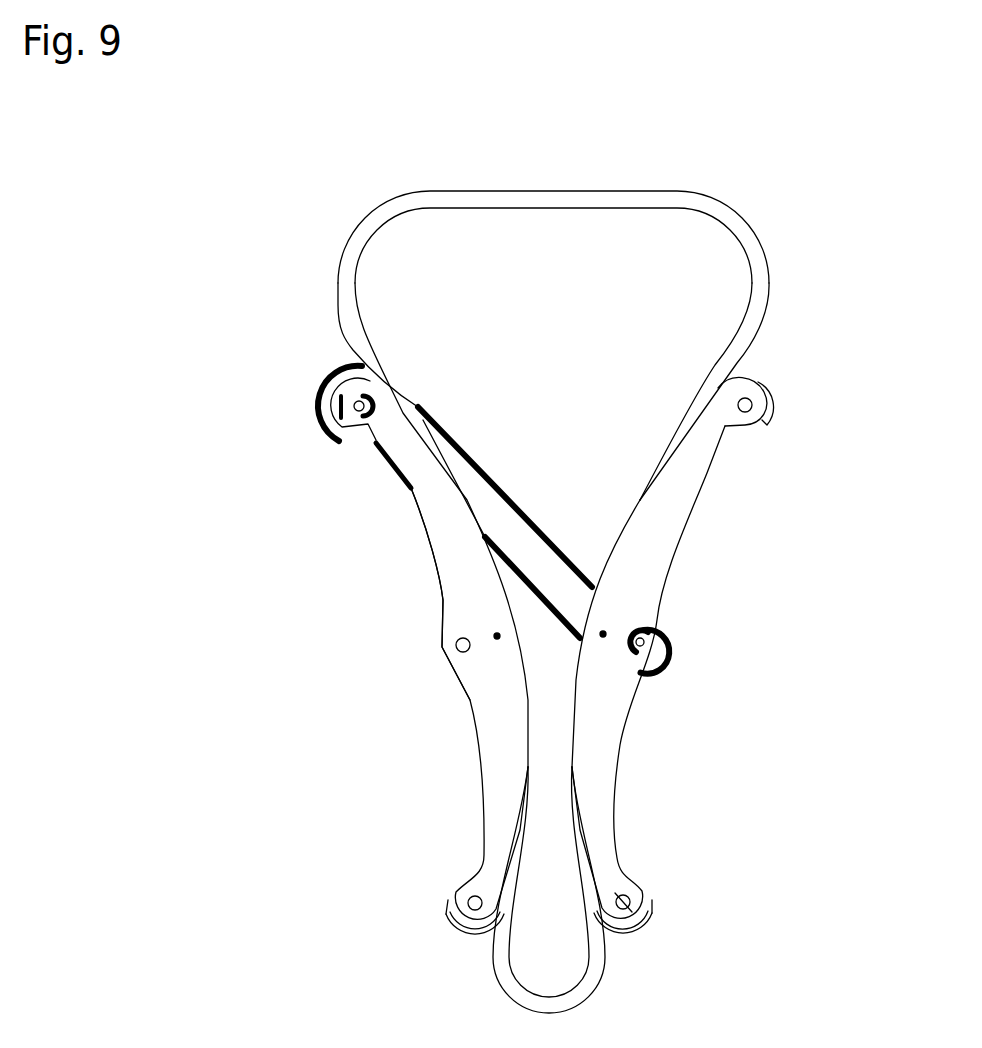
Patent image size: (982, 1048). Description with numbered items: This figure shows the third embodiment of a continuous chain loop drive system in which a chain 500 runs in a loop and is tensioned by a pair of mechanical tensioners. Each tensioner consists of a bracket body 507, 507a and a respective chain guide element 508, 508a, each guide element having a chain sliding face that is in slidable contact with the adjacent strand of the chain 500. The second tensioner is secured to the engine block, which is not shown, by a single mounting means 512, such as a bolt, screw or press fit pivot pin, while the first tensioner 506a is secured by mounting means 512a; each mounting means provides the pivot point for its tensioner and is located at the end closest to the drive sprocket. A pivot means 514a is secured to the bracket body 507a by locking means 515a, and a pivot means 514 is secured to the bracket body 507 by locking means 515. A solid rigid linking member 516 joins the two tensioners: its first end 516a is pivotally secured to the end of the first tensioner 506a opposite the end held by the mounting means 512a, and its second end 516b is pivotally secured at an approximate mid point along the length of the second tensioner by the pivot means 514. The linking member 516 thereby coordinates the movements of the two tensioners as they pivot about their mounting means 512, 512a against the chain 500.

The chain 500 is at (357, 240).
The first tensioner 506a is at (421, 613).
The bracket body 507 is at (594, 737).
The bracket body 507a is at (503, 717).
The chain guide element 508 is at (773, 398).
The chain guide element 508a is at (457, 927).
The mounting means 512 is at (630, 905).
The mounting means 512a is at (468, 903).
The pivot means 514 is at (644, 641).
The pivot means 514a is at (353, 406).
The locking means 515 is at (658, 626).
The locking means 515a is at (350, 428).
The linking member 516 is at (525, 560).
The first end of the linking member 516a is at (330, 380).
The second end of the linking member 516b is at (668, 662).